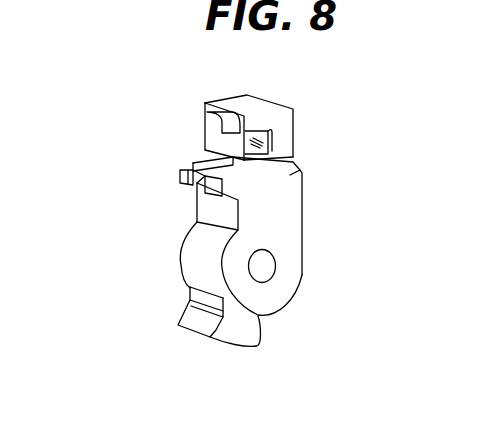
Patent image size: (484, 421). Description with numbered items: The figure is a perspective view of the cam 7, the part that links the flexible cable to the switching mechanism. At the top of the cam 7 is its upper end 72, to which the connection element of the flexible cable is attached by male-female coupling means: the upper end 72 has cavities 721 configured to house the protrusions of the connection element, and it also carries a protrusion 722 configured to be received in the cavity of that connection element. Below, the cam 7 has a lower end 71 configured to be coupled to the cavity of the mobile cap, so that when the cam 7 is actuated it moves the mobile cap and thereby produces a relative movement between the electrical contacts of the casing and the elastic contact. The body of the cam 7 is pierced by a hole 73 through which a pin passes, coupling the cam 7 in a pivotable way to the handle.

The cam 7 is at (150, 228).
The lower end 71 is at (172, 313).
The upper end 72 is at (229, 125).
The cavities 721 is at (259, 143).
The protrusion 722 is at (201, 114).
The hole 73 is at (281, 263).